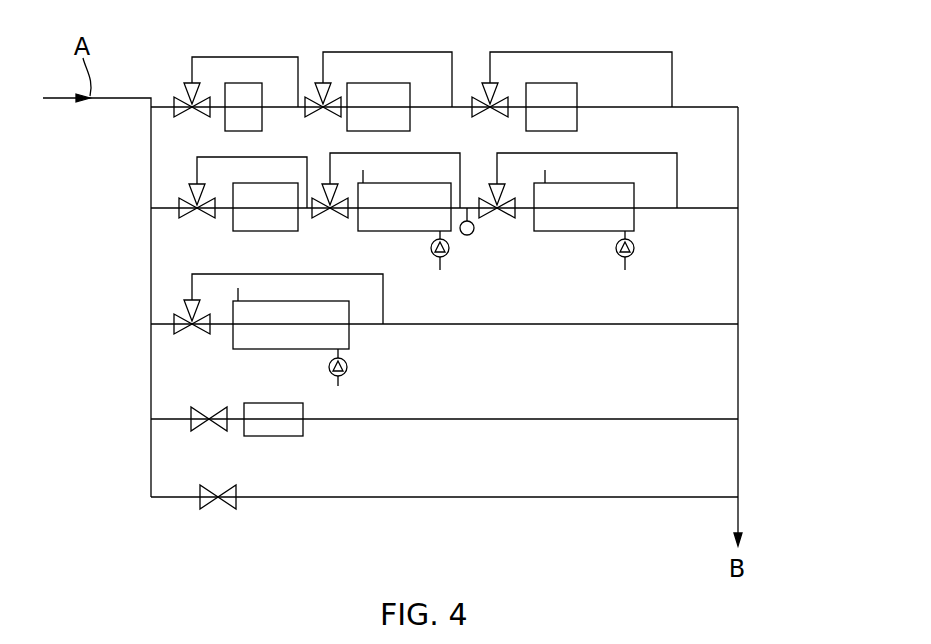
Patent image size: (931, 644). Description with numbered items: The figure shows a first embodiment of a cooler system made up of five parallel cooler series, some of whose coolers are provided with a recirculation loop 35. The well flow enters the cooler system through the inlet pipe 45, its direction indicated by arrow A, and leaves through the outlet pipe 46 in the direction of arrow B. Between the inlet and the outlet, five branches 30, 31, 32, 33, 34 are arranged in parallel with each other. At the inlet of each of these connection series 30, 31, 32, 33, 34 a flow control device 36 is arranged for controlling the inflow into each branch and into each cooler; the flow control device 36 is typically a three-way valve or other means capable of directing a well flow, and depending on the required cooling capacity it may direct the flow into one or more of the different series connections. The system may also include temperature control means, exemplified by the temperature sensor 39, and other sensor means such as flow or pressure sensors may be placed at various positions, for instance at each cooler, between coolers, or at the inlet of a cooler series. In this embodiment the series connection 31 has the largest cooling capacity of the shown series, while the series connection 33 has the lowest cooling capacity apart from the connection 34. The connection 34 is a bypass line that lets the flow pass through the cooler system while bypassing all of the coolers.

The branch 30 is at (708, 101).
The series connection 31 is at (703, 203).
The branch 32 is at (703, 319).
The series connection 33 is at (703, 414).
The bypass line 34 is at (703, 492).
The recirculation loop 35 is at (244, 57).
The flow control device 36 is at (181, 84).
The temperature sensor 39 is at (472, 233).
The inlet pipe 45 is at (128, 100).
The outlet pipe 46 is at (740, 523).